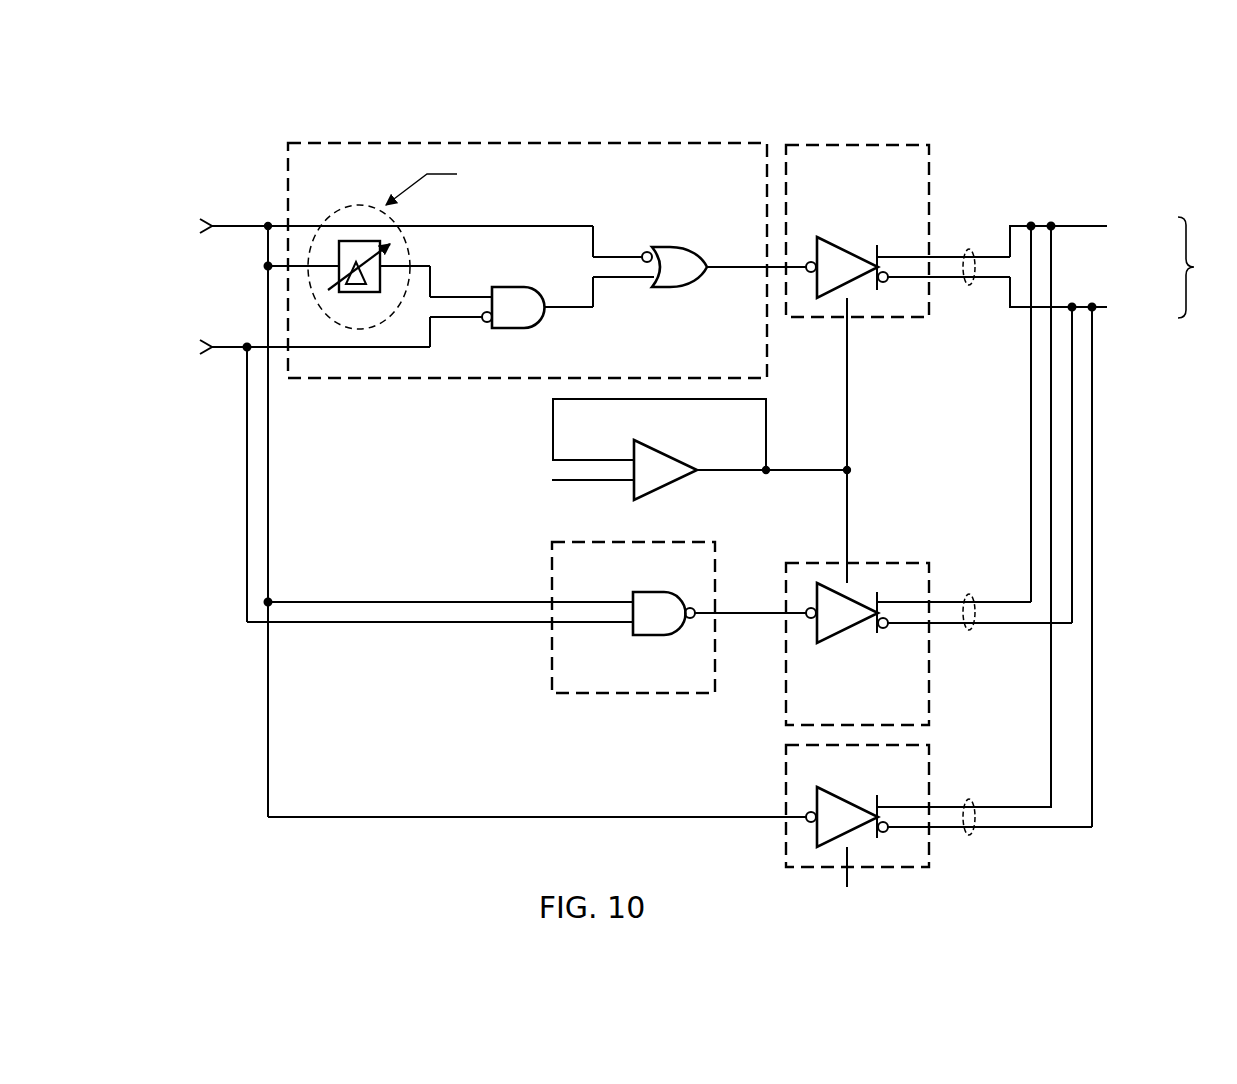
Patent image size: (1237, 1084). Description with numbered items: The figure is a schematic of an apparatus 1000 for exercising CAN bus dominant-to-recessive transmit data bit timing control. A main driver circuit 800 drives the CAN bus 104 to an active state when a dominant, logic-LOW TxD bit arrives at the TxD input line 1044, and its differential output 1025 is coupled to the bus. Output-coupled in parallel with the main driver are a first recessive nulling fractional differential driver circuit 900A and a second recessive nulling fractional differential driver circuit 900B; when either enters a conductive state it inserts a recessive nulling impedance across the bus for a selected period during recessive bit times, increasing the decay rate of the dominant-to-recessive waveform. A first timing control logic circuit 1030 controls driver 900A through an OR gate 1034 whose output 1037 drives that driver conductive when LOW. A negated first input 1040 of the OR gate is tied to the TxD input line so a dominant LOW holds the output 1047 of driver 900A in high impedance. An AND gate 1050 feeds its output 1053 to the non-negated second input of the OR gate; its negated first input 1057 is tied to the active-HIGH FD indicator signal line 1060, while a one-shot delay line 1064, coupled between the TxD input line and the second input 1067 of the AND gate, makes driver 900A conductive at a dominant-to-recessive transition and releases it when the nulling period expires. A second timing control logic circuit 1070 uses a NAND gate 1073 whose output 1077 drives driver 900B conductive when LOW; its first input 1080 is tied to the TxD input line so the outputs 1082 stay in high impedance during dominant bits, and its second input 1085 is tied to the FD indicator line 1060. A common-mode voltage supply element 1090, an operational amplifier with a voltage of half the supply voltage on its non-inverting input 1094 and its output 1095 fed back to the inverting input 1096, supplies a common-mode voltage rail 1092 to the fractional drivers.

The apparatus 1000 is at (1078, 162).
The first timing control logic circuit 1030 is at (440, 141).
The one-shot delay line 1064 is at (357, 240).
The TxD input line 1044 is at (227, 225).
The FD indicator signal line 1060 is at (227, 345).
The second input of the AND gate 1067 is at (470, 294).
The AND gate 1050 is at (512, 287).
The negated first input of the AND gate 1057 is at (470, 321).
The negated first input of the OR gate 1040 is at (642, 254).
The OR gate 1034 is at (684, 246).
The output of the AND gate 1053 is at (636, 280).
The output of the OR gate 1037 is at (722, 271).
The first recessive nulling fractional differential driver circuit 900A is at (877, 139).
The output of the first fractional differential driver circuit 1047 is at (969, 247).
The CAN bus 104 is at (1122, 522).
The common-mode voltage rail 1092 is at (848, 391).
The inverting input 1096 is at (603, 459).
The common-mode voltage supply element 1090 is at (665, 452).
The non-inverting input 1094 is at (603, 483).
The output of the operational amplifier 1095 is at (716, 473).
The second timing control logic circuit 1070 is at (604, 701).
The first input of the NAND gate 1080 is at (603, 600).
The second input of the NAND gate 1085 is at (603, 626).
The NAND gate 1073 is at (654, 637).
The output of the NAND gate 1077 is at (738, 616).
The second recessive nulling fractional differential driver circuit 900B is at (938, 697).
The outputs of the second recessive nulling driver 1082 is at (969, 631).
The main driver circuit 800 is at (900, 875).
The differential output of the main driver 1025 is at (969, 836).